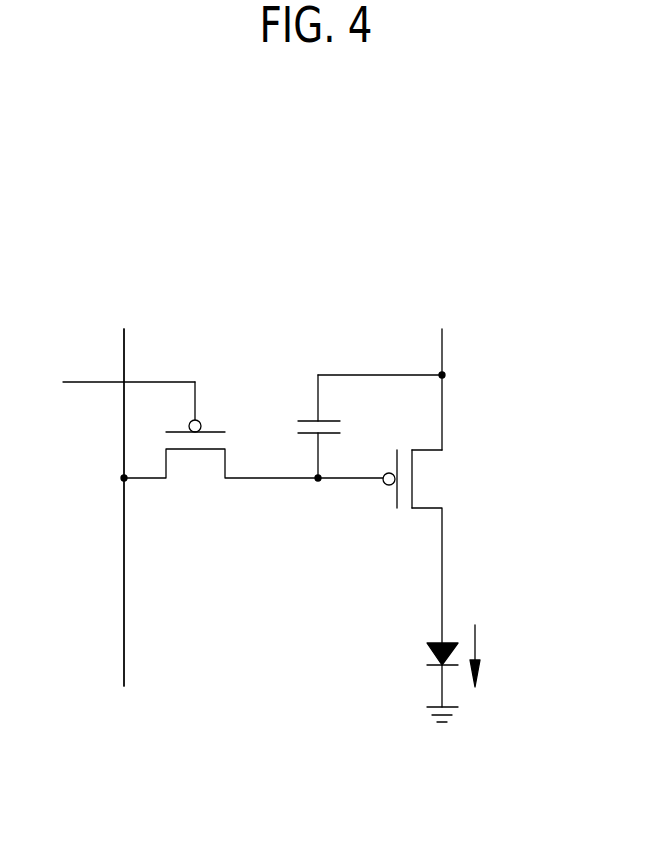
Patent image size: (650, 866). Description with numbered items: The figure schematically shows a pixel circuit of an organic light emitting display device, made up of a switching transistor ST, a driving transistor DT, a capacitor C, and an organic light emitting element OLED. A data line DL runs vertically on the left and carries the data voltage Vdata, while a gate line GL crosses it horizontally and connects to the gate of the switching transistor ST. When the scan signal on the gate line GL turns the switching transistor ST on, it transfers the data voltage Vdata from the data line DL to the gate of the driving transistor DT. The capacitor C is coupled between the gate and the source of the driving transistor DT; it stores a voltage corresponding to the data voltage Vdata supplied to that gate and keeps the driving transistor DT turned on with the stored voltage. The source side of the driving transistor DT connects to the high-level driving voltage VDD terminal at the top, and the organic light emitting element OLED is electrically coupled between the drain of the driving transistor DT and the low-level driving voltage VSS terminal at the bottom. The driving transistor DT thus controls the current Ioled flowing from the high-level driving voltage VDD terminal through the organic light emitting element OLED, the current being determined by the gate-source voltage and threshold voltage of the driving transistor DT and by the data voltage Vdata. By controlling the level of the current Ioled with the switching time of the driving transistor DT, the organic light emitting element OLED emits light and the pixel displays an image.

The data voltage Vdata is at (124, 495).
The data line DL is at (124, 355).
The gate line GL is at (93, 383).
The switching transistor ST is at (253, 444).
The capacitor C is at (331, 428).
The high-level driving voltage VDD is at (392, 377).
The driving transistor DT is at (433, 546).
The organic light emitting element OLED is at (405, 675).
The current Ioled is at (503, 656).
The low-level driving voltage VSS is at (447, 736).